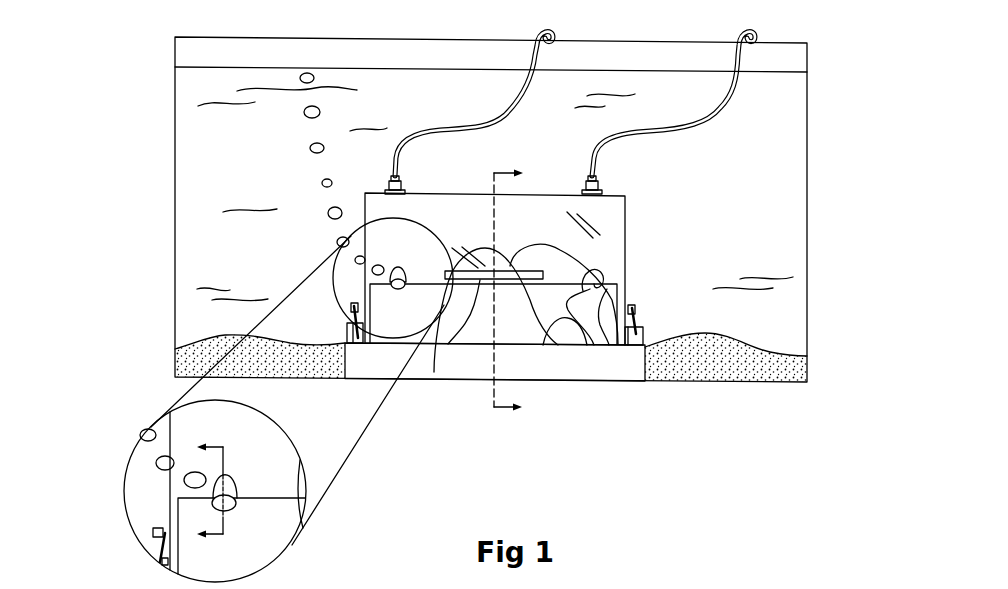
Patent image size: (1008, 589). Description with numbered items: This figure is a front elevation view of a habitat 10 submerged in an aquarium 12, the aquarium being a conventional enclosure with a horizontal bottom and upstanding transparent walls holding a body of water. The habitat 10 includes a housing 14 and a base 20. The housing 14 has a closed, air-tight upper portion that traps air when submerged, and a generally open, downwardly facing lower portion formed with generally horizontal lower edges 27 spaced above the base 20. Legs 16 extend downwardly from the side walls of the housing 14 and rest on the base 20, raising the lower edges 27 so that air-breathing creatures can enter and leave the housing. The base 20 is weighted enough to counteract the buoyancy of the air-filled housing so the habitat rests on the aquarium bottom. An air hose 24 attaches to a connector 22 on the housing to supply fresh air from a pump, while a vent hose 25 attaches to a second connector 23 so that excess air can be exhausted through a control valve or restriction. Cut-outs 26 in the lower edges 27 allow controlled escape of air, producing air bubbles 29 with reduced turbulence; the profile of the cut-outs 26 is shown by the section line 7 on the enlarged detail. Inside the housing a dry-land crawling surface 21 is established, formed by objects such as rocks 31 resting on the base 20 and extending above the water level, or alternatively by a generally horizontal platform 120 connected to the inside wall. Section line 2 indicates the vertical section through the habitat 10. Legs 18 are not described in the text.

The habitat 10 is at (396, 323).
The aquarium 12 is at (807, 175).
The housing 14 is at (627, 215).
The legs 16 is at (623, 300).
The support legs 18 is at (338, 327).
The base 20 is at (639, 380).
The crawling surface 21 is at (537, 253).
The connector 22 is at (606, 186).
The second connector 23 is at (405, 186).
The air hose 24 is at (715, 108).
The vent hose 25 is at (497, 118).
The cut-outs 26 is at (603, 280).
The lower edges 27 is at (610, 345).
The air bubbles 29 is at (321, 183).
The rocks 31 is at (738, 368).
The platform 120 is at (434, 372).
The section line 2- 2 is at (517, 290).
The section line 7- 7 is at (202, 491).